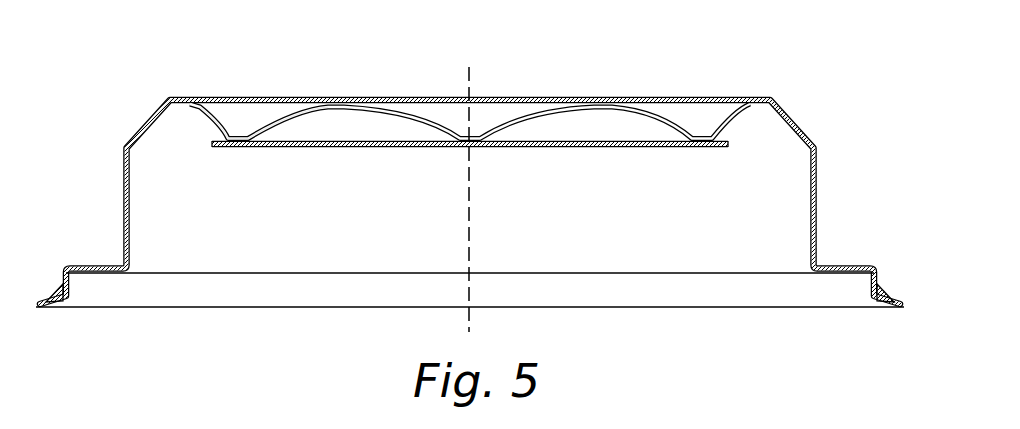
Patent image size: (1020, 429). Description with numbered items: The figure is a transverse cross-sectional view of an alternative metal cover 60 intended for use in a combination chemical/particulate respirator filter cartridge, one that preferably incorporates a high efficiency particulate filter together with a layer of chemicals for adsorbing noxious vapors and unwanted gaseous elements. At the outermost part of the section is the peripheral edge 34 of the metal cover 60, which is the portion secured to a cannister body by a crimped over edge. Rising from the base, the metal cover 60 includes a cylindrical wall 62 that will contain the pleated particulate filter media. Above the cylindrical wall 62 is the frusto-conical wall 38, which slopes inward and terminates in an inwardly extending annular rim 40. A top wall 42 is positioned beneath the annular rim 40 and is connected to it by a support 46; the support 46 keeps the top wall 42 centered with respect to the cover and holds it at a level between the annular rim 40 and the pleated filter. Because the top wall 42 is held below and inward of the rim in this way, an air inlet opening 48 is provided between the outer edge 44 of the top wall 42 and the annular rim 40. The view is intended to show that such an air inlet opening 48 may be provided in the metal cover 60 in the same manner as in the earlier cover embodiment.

The peripheral edge 34 is at (42, 308).
The frusto-conical wall 38 is at (793, 120).
The annular rim 40 is at (182, 98).
The top wall 42 is at (583, 147).
The outer edge 44 is at (212, 146).
The support 46 is at (499, 108).
The air inlet opening 48 is at (204, 130).
The metal cover 60 is at (656, 72).
The cylindrical wall 62 is at (123, 193).